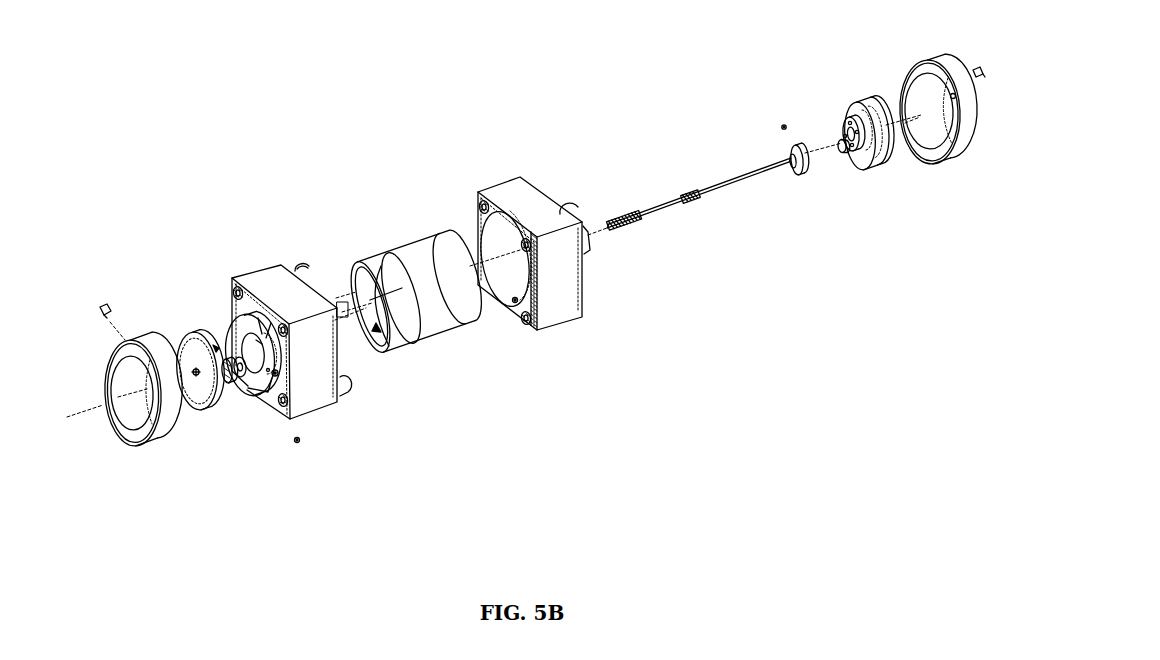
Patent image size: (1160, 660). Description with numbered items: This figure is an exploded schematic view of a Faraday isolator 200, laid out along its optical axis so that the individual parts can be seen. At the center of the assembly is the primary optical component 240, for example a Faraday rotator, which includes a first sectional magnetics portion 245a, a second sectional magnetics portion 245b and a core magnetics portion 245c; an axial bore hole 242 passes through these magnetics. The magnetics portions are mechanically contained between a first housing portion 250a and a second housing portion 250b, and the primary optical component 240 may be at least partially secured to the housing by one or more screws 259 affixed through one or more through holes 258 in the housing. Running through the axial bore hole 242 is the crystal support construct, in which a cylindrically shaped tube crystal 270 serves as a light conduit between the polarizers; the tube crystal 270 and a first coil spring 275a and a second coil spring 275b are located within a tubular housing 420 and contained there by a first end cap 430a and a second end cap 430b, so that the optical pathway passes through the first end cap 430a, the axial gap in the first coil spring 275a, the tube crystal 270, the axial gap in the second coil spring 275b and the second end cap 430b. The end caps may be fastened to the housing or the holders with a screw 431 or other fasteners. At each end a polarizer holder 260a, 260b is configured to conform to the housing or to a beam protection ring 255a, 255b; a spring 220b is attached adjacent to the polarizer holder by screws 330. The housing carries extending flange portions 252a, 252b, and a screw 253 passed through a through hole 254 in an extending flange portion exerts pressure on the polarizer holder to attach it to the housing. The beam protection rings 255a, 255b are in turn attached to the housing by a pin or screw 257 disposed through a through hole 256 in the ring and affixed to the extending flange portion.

The Faraday isolator 200 is at (701, 425).
The spring 220b is at (846, 115).
The primary optical component 240 is at (413, 313).
The axial bore hole 242 is at (378, 330).
The first sectional magnetics portion 245a is at (377, 262).
The second sectional magnetics portion 245b is at (445, 232).
The core magnetics portion 245c is at (456, 291).
The first housing portion 250a is at (256, 327).
The second housing portion 250b is at (541, 244).
The extending flange portion 252a is at (259, 269).
The extending flange portion 252b is at (575, 211).
The screw 253 is at (278, 371).
The through hole 254 is at (266, 401).
The beam protection ring 255a is at (167, 432).
The beam protection ring 255b is at (925, 58).
The through hole 256 is at (953, 93).
The pin or screw 257 is at (103, 302).
The through hole 258 is at (515, 304).
The screw 259 is at (297, 449).
The polarizer holder 260a is at (194, 369).
The polarizer holder 260b is at (870, 100).
The tube crystal 270 is at (714, 194).
The first coil spring 275a is at (629, 225).
The second coil spring 275b is at (697, 201).
The screw 330 is at (843, 155).
The tubular housing 420 is at (737, 175).
The first end cap 430a is at (257, 333).
The second end cap 430b is at (798, 179).
The screw 431 is at (782, 123).